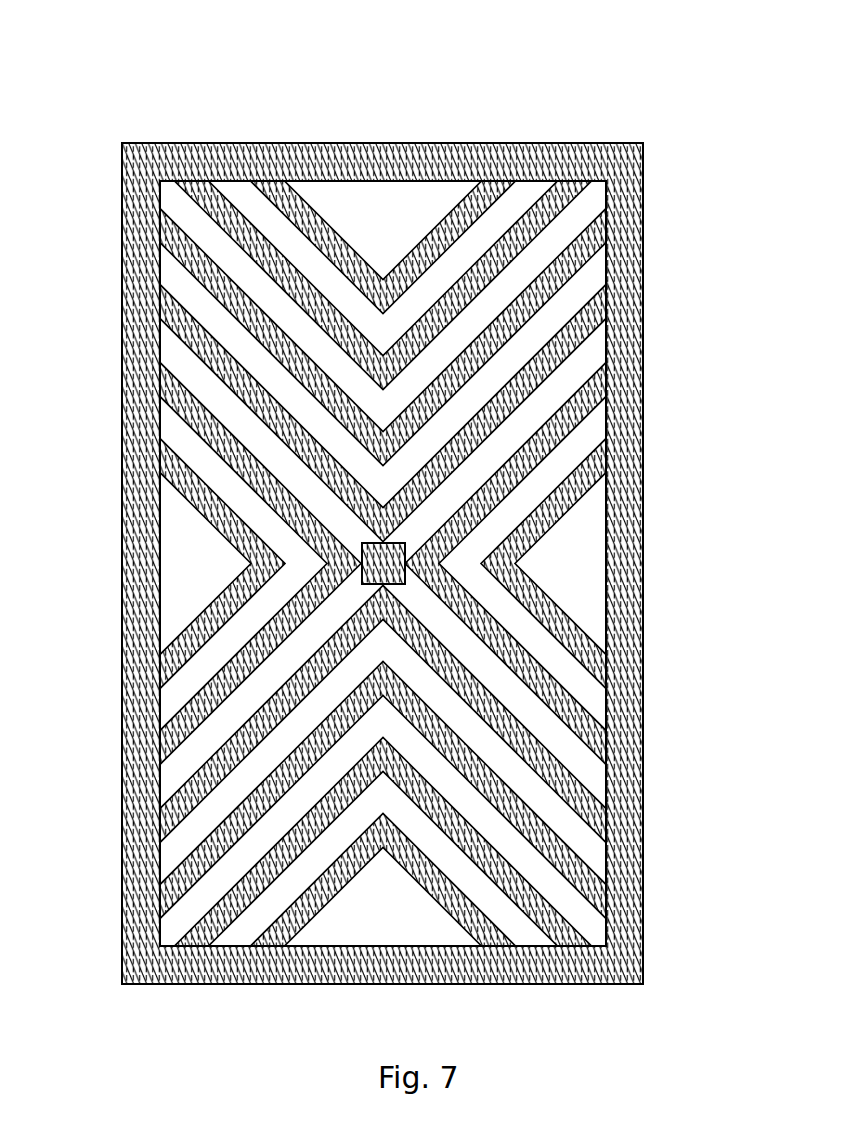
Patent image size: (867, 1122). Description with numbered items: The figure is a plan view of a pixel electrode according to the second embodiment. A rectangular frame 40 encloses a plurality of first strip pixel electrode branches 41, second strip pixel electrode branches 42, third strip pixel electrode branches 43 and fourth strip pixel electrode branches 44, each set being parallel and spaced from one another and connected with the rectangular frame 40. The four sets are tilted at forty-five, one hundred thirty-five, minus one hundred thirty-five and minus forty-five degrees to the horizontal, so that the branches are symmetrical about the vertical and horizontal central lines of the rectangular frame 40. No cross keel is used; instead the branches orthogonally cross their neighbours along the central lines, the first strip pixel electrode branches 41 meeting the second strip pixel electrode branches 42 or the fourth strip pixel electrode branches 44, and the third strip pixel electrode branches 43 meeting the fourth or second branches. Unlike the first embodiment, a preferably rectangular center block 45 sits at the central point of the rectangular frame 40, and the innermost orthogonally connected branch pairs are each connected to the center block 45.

The rectangular frame 40 is at (375, 146).
The first strip pixel electrode branches 41 is at (433, 233).
The second strip pixel electrode branches 42 is at (433, 195).
The third strip pixel electrode branches 43 is at (433, 930).
The fourth strip pixel electrode branches 44 is at (433, 892).
The center block 45 is at (380, 563).